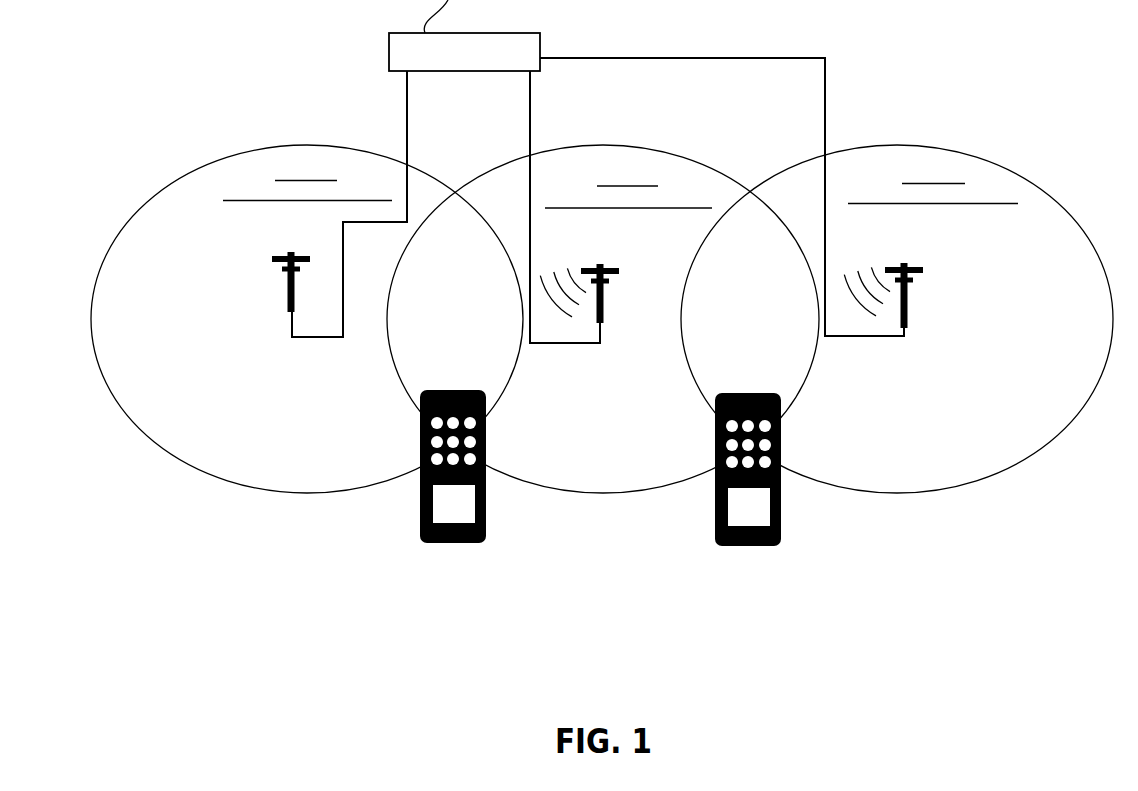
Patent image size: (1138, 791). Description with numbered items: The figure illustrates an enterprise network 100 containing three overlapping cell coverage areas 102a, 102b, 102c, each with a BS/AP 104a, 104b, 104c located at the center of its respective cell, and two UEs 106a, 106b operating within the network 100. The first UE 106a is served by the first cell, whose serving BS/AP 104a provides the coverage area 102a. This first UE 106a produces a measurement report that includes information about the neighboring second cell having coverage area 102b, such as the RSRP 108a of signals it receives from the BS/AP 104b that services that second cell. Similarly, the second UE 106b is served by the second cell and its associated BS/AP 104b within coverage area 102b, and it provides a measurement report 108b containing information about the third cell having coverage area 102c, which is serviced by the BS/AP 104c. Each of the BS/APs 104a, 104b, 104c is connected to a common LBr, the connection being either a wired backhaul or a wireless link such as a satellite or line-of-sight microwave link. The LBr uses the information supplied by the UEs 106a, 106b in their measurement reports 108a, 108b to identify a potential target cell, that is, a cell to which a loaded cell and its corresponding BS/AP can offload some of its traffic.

The enterprise network 100 is at (602, 342).
The cell coverage area 102a is at (195, 173).
The cell coverage area 102b is at (550, 490).
The cell coverage area 102c is at (843, 148).
The BS/AP 104a is at (280, 283).
The BS/AP 104b is at (605, 327).
The BS/AP 104c is at (908, 333).
The UE 106a is at (415, 540).
The UE 106b is at (782, 540).
The RSRP 108a is at (458, 308).
The measurement report 108b is at (768, 305).